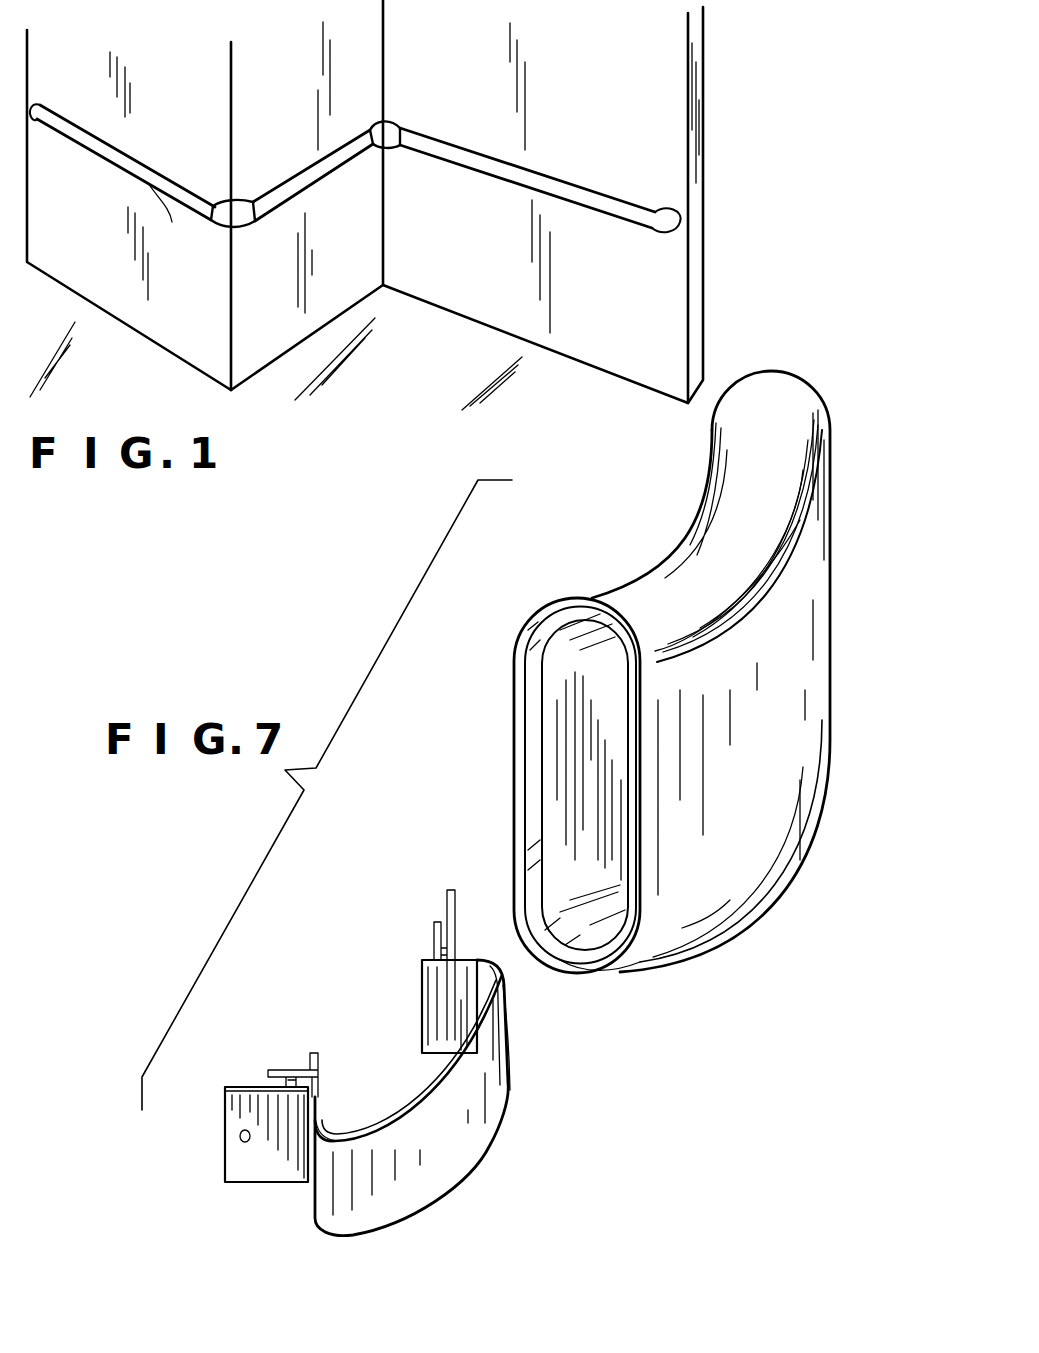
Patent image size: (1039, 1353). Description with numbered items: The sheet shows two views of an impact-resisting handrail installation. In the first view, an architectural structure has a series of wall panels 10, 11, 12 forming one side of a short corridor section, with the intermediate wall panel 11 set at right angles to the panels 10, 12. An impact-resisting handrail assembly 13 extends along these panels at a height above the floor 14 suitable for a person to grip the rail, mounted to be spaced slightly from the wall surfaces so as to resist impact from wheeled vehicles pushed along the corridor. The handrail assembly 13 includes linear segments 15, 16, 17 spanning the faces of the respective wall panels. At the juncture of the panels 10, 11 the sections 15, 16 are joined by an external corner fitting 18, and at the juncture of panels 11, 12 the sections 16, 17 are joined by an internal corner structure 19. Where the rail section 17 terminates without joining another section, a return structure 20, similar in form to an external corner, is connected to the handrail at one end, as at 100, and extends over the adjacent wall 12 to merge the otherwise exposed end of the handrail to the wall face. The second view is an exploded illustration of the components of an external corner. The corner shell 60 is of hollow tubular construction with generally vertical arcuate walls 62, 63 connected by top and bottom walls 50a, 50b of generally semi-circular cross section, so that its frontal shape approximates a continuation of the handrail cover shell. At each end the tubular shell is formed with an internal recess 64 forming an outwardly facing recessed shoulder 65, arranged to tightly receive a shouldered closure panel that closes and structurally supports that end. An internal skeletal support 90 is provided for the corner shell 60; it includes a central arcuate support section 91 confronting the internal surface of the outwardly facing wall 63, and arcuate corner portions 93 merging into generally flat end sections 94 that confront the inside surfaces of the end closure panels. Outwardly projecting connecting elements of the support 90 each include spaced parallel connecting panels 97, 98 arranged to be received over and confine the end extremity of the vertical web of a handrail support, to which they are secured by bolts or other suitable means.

In FIG. 1, the wall panel 10 is at (216, 104).
In FIG. 1, the intermediate wall panel 11 is at (365, 22).
In FIG. 1, the wall panel 12 is at (675, 95).
In FIG. 1, the impact-resisting handrail assembly 13 is at (147, 156).
In FIG. 1, the floor 14 is at (112, 362).
In FIG. 1, the linear handrail segment 15 is at (168, 219).
In FIG. 1, the linear handrail segment 16 is at (303, 180).
In FIG. 1, the linear handrail segment 17 is at (496, 176).
In FIG. 1, the external corner fitting 18 is at (240, 220).
In FIG. 1, the internal corner structure 19 is at (393, 131).
In FIG. 1, the return structure 20 is at (40, 104).
In FIG. 1, the connection of return to handrail 100 is at (355, 175).
In FIG. 7, the top wall 50a is at (712, 563).
In FIG. 7, the bottom wall 50b is at (612, 976).
In FIG. 7, the corner shell 60 is at (635, 698).
In FIG. 7, the arcuate wall 62 is at (514, 740).
In FIG. 7, the outwardly facing arcuate wall 63 is at (720, 882).
In FIG. 7, the internal recess 64 is at (522, 706).
In FIG. 7, the recessed shoulder 65 is at (540, 814).
In FIG. 7, the internal skeletal support 90 is at (369, 1063).
In FIG. 7, the central arcuate support section 91 is at (482, 1128).
In FIG. 7, the arcuate corner portion 93 is at (332, 1127).
In FIG. 7, the flat end section 94 is at (430, 1026).
In FIG. 7, the connecting panel 97 is at (238, 1158).
In FIG. 7, the connecting panel 98 is at (283, 1070).